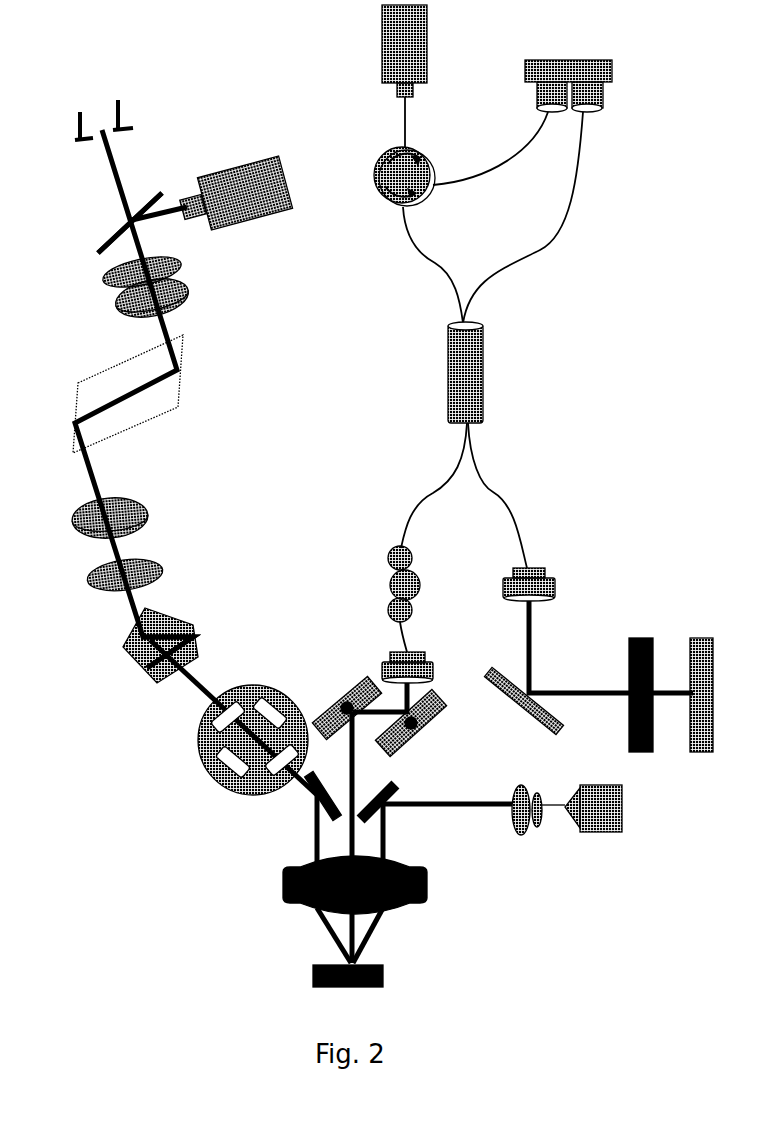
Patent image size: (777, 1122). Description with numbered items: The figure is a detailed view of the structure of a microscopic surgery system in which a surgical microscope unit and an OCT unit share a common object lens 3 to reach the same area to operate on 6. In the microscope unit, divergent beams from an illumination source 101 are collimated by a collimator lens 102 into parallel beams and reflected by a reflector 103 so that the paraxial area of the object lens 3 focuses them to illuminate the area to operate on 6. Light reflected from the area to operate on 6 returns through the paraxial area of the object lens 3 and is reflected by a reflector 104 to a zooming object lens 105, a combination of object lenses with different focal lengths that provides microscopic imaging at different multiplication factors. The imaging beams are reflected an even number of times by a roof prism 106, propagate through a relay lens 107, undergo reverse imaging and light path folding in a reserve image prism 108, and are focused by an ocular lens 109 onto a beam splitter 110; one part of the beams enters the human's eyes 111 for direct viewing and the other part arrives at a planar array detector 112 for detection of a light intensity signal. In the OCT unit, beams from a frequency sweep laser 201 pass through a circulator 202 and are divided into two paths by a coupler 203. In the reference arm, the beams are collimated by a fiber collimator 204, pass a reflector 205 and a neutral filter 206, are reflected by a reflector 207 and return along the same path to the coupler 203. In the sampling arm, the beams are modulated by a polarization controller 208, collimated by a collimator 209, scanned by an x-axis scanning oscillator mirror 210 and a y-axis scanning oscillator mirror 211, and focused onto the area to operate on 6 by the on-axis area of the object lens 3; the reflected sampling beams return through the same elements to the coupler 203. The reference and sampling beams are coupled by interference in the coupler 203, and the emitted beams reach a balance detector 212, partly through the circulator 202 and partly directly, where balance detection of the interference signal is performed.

The object lens 3 is at (341, 885).
The area to operate on 6 is at (317, 978).
The illumination source 101 is at (595, 829).
The collimator lens 102 is at (536, 831).
The reflector 103 is at (383, 818).
The reflector 104 is at (304, 800).
The zooming object lens 105 is at (250, 749).
The roof prism 106 is at (154, 653).
The relay lens 107 is at (101, 545).
The reserve image prism 108 is at (104, 394).
The ocular lens 109 is at (131, 291).
The beam splitter 110 is at (110, 223).
The human's eyes 111 is at (83, 129).
The planar array detector 112 is at (236, 210).
The frequency sweep laser 201 is at (378, 51).
The circulator 202 is at (379, 176).
The coupler 203 is at (440, 372).
The fiber collimator 204 is at (553, 584).
The reflector 205 is at (523, 701).
The neutral filter 206 is at (641, 674).
The reflector 207 is at (707, 674).
The polarization controller 208 is at (381, 584).
The collimator 209 is at (385, 667).
The x-axis scanning oscillator mirror 210 is at (415, 726).
The y-axis scanning oscillator mirror 211 is at (345, 707).
The balance detector 212 is at (544, 86).